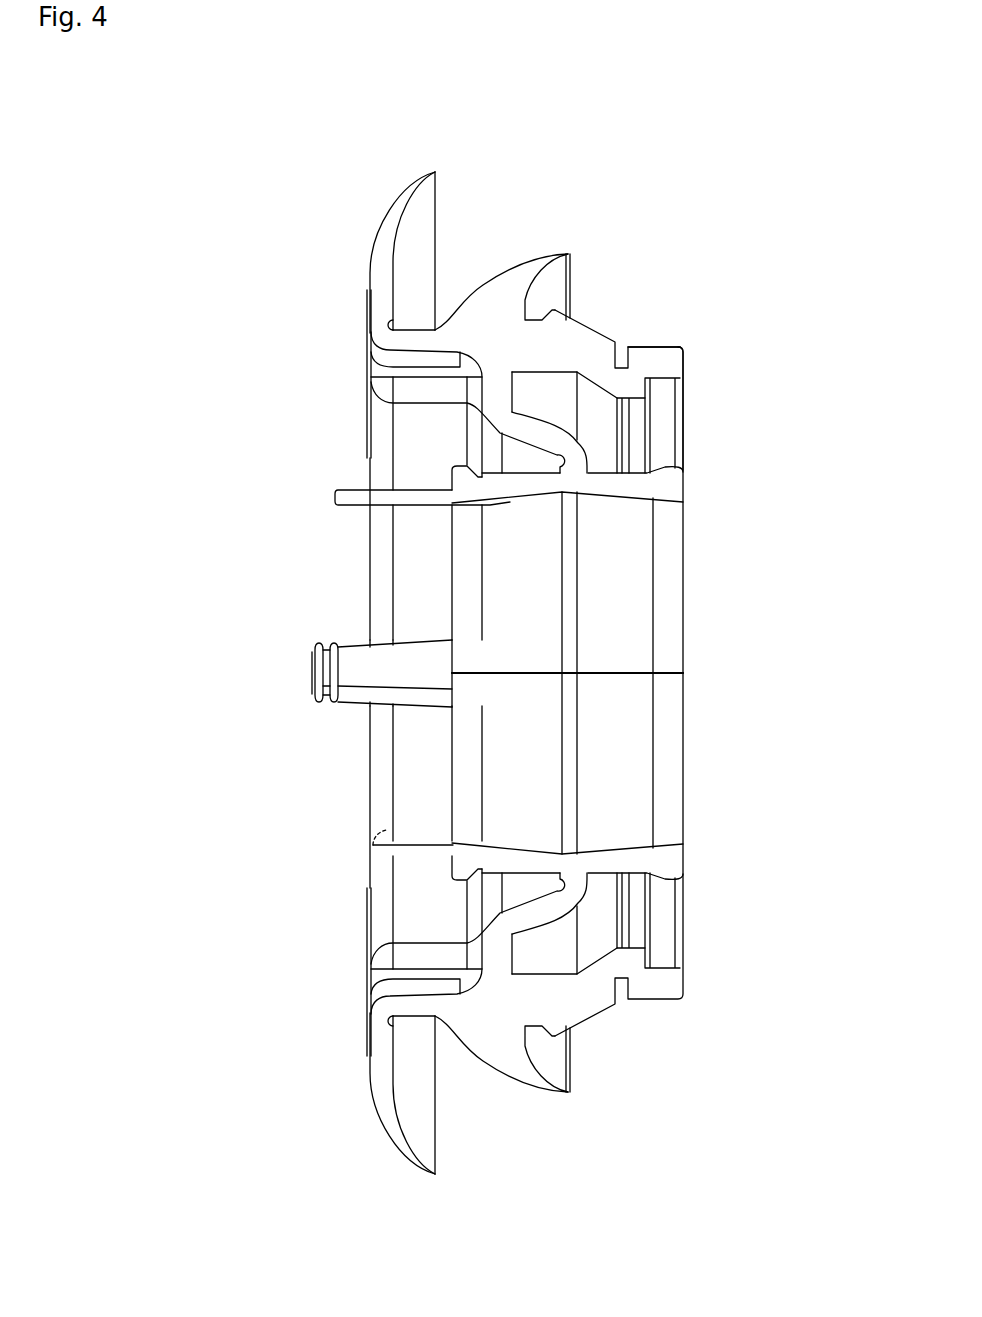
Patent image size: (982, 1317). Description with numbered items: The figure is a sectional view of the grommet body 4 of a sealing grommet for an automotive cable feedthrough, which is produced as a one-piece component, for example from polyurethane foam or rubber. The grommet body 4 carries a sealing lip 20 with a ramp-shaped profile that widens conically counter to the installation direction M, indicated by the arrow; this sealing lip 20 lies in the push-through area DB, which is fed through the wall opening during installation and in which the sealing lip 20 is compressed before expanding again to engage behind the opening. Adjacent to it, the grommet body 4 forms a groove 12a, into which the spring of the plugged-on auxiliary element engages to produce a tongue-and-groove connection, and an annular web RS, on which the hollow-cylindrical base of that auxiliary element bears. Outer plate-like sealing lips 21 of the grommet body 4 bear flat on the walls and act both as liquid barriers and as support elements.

The plate-like sealing lip 21 is at (549, 250).
The sealing lip 20 is at (581, 311).
The groove 12a is at (628, 356).
The annular web RS is at (672, 342).
The grommet body 4 is at (744, 190).
The installation direction M is at (846, 671).
The push-through area DB is at (545, 1042).